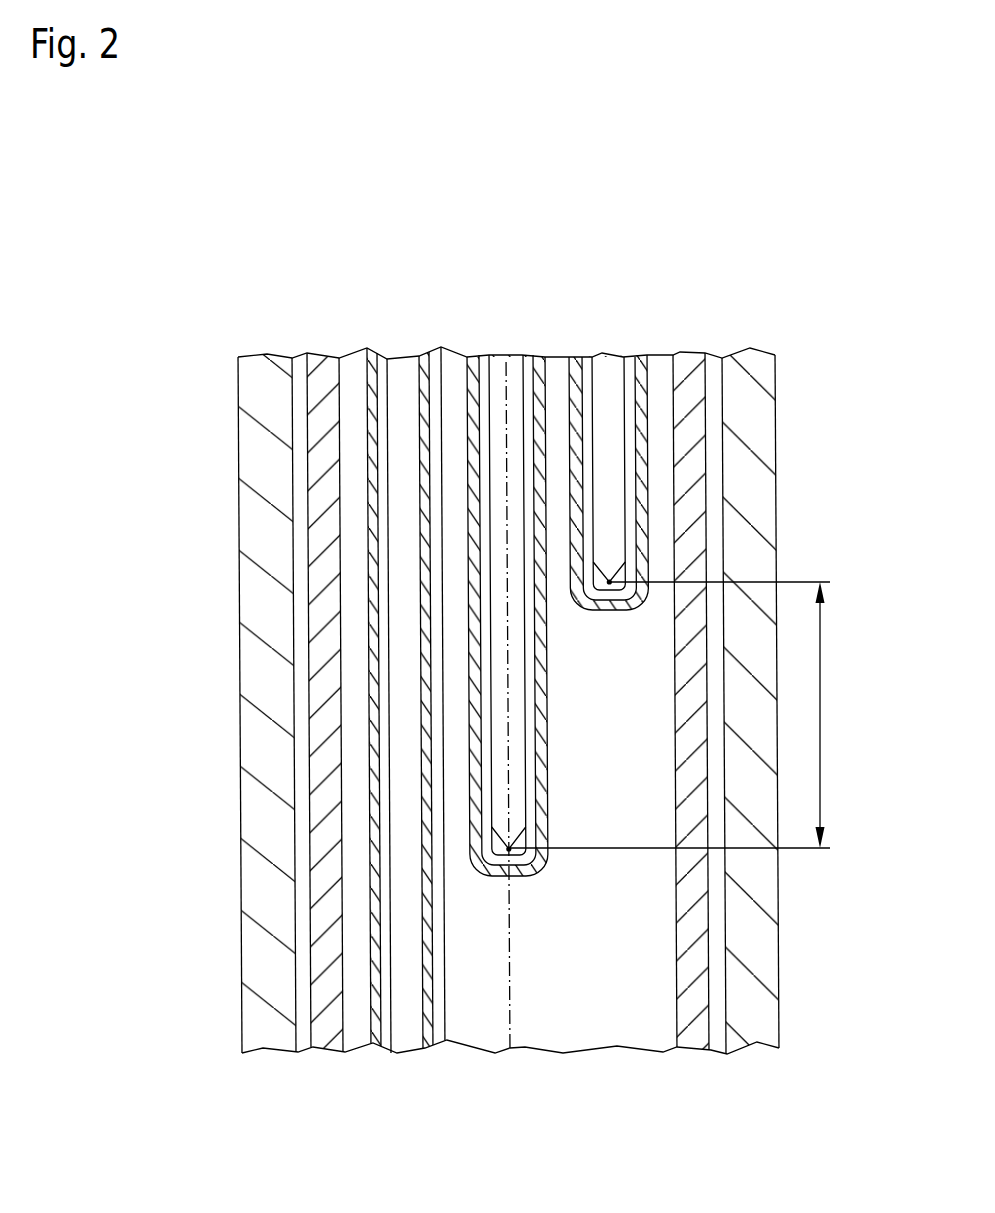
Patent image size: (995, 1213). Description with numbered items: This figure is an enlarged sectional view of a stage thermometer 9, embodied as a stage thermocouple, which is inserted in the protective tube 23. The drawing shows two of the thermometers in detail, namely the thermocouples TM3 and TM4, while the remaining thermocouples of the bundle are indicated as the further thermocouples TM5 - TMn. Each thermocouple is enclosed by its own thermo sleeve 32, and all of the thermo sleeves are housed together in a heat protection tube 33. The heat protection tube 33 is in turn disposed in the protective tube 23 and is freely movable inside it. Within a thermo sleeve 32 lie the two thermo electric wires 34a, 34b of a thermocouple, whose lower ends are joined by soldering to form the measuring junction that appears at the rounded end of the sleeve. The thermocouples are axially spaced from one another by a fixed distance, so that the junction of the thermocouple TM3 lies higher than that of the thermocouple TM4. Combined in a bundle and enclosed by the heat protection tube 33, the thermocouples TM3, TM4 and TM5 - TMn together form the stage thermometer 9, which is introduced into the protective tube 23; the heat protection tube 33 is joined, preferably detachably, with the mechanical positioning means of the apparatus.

The stage thermometer 9 is at (454, 340).
The protective tube 23 is at (752, 401).
The thermo sleeve 32 is at (534, 356).
The heat protection tube 33 is at (316, 365).
The thermo electric wire 34a is at (596, 358).
The thermo electric wire 34b is at (618, 360).
The thermocouple TM3 is at (613, 585).
The thermocouple TM4 is at (530, 875).
The further thermocouples TM5 - TMn is at (373, 977).